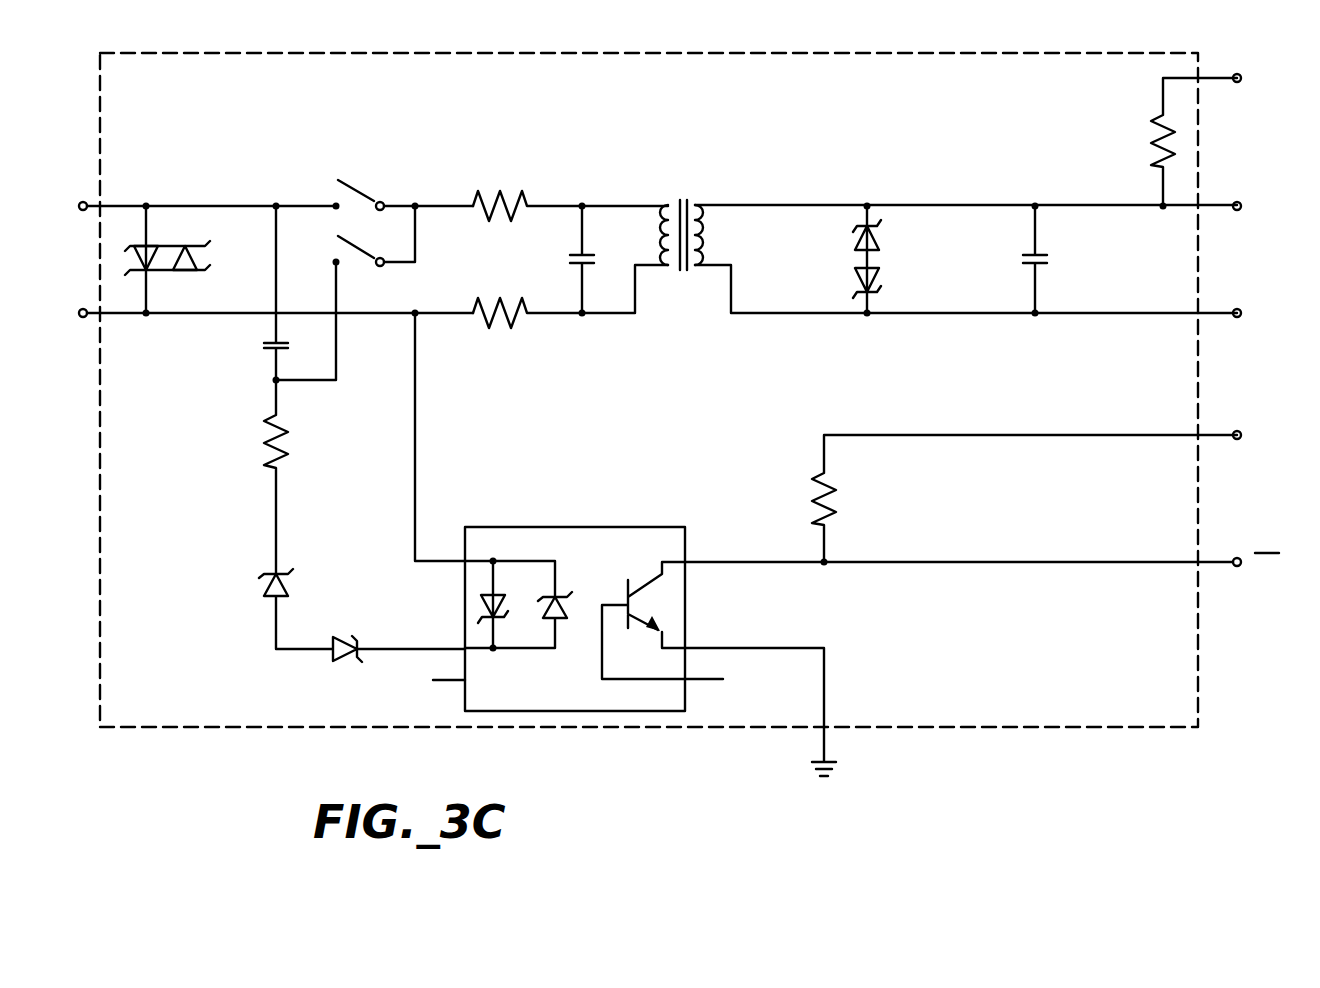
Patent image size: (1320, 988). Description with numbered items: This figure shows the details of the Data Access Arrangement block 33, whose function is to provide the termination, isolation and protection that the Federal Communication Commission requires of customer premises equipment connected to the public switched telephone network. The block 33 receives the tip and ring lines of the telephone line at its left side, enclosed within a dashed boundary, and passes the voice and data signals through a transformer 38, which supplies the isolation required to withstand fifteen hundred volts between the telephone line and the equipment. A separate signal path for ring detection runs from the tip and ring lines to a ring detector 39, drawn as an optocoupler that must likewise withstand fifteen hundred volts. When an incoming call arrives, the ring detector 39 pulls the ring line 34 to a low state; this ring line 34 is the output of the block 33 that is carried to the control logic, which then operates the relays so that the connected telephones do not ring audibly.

The Data Access Arrangement block 33 is at (912, 53).
The ring line 34 is at (1222, 563).
The transformer 38 is at (684, 194).
The ring detector 39 is at (620, 527).